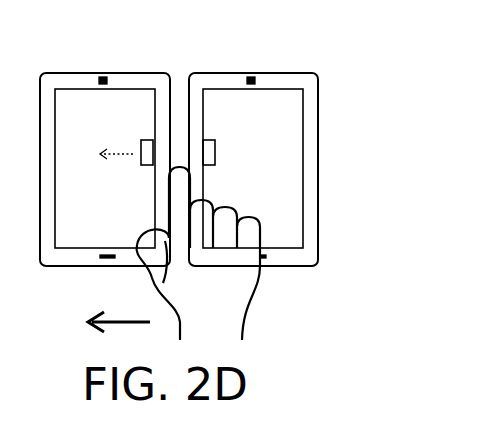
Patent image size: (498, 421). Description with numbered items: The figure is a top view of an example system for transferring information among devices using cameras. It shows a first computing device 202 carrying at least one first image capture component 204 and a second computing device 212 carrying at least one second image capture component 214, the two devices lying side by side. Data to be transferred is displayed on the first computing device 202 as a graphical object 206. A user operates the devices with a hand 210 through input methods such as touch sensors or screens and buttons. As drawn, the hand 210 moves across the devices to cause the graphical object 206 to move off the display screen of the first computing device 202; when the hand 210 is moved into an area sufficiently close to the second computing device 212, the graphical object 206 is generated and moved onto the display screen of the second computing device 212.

The first computing device 202 is at (230, 73).
The first image capture component 204 is at (251, 77).
The data / graphical object 206 is at (141, 148).
The hand 210 is at (150, 282).
The second computing device 212 is at (82, 73).
The second image capture component 214 is at (103, 77).